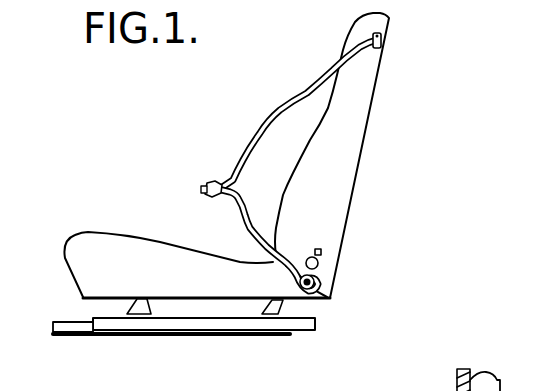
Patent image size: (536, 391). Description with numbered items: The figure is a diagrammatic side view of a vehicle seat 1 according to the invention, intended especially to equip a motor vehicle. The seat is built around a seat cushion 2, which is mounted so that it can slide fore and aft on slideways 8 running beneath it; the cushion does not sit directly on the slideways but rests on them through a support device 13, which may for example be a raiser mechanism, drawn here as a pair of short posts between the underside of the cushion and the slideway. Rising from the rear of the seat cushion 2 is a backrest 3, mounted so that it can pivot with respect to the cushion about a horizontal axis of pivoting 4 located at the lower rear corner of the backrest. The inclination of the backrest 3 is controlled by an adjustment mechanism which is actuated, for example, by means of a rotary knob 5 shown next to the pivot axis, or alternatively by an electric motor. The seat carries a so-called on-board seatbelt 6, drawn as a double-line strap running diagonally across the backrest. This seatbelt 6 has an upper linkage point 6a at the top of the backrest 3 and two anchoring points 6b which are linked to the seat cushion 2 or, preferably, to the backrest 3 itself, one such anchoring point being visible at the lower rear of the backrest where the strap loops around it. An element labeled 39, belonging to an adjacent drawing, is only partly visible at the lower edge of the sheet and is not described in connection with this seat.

The vehicle seat 1 is at (236, 149).
The seat cushion 2 is at (118, 250).
The backrest 3 is at (348, 128).
The horizontal axis of pivoting 4 is at (322, 253).
The rotary knob 5 is at (318, 265).
The on-board seatbelt 6 is at (300, 98).
The upper linkage point 6a is at (382, 43).
The anchoring points 6b is at (316, 283).
The slideways 8 is at (70, 327).
The support device 13 is at (120, 305).
The support member (adjacent figure fragment) 39 is at (446, 380).